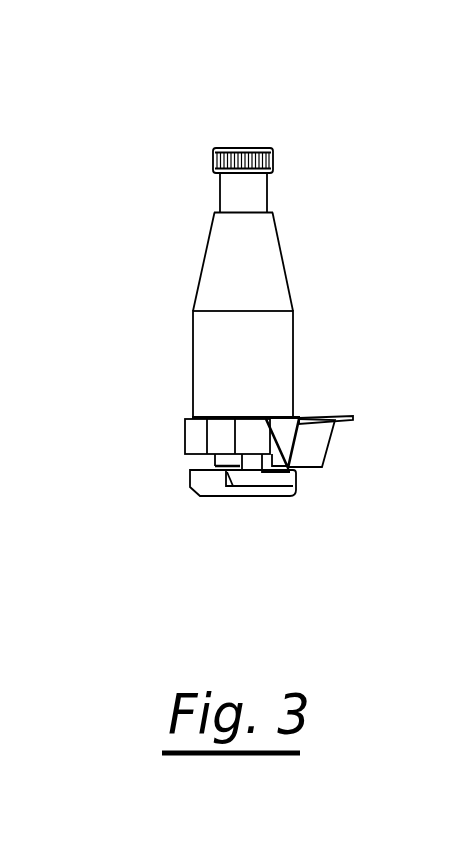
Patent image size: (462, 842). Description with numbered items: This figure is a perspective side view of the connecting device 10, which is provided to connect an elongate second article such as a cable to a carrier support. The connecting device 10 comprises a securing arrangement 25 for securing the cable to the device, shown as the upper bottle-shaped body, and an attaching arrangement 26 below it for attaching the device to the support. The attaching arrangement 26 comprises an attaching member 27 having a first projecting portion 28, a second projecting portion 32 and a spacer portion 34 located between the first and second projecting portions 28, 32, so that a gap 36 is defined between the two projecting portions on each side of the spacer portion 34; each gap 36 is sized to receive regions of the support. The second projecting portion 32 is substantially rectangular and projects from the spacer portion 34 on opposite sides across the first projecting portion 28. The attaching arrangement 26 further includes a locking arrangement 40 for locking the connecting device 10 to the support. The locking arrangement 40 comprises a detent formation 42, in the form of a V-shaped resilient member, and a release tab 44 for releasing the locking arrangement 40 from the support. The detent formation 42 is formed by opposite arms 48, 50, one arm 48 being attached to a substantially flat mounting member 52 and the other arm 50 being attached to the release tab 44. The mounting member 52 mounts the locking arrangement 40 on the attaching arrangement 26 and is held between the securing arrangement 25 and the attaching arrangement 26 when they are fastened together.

The connecting device 10 is at (306, 212).
The securing arrangement 25 is at (291, 279).
The attaching arrangement 26 is at (183, 443).
The attaching member 27 is at (222, 499).
The first projecting portion 28 is at (190, 428).
The second projecting portion 32 is at (200, 483).
The spacer portion 34 is at (238, 465).
The gap 36 is at (243, 470).
The locking arrangement 40 is at (326, 460).
The detent formation 42 is at (311, 456).
The release tab 44 is at (345, 416).
The arm 48 is at (292, 428).
The arm 50 is at (322, 430).
The mounting member 52 is at (241, 417).